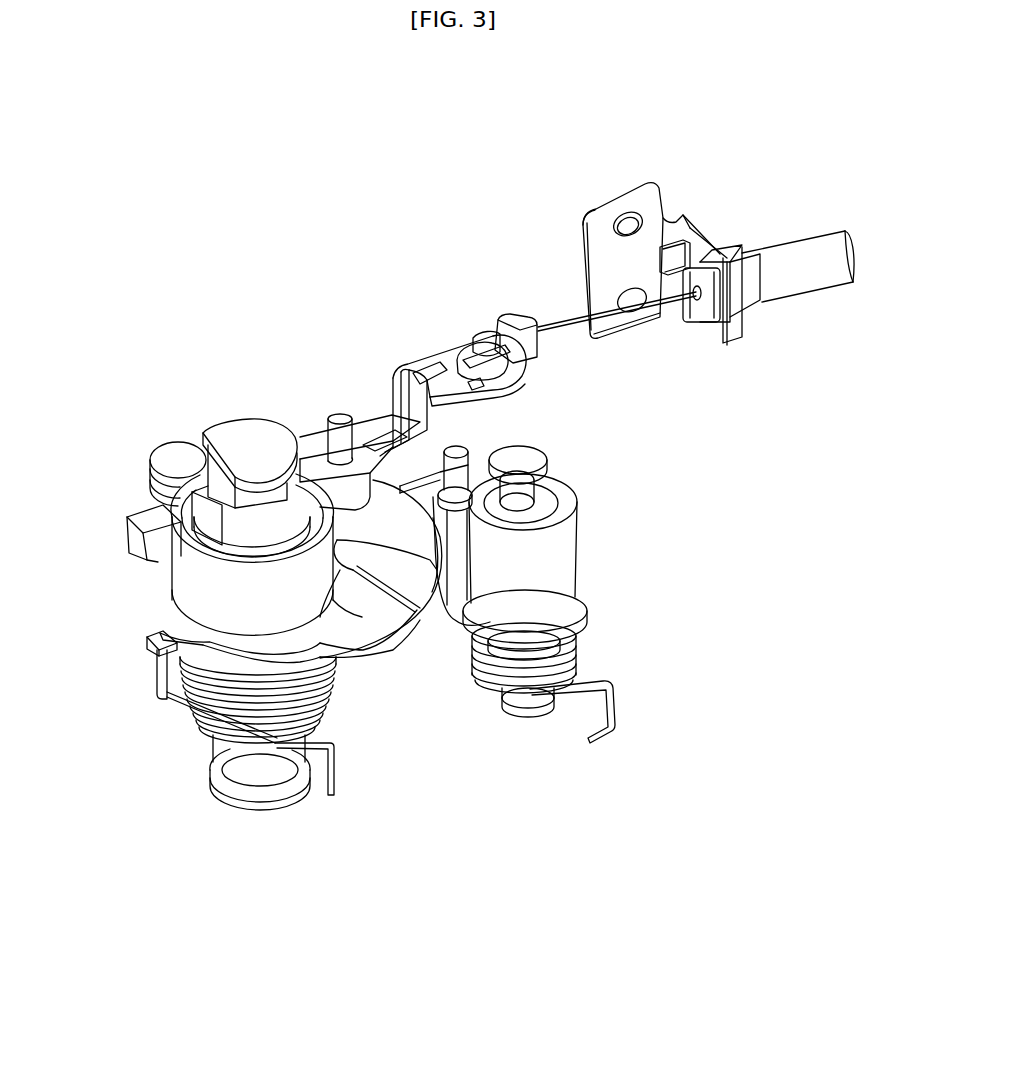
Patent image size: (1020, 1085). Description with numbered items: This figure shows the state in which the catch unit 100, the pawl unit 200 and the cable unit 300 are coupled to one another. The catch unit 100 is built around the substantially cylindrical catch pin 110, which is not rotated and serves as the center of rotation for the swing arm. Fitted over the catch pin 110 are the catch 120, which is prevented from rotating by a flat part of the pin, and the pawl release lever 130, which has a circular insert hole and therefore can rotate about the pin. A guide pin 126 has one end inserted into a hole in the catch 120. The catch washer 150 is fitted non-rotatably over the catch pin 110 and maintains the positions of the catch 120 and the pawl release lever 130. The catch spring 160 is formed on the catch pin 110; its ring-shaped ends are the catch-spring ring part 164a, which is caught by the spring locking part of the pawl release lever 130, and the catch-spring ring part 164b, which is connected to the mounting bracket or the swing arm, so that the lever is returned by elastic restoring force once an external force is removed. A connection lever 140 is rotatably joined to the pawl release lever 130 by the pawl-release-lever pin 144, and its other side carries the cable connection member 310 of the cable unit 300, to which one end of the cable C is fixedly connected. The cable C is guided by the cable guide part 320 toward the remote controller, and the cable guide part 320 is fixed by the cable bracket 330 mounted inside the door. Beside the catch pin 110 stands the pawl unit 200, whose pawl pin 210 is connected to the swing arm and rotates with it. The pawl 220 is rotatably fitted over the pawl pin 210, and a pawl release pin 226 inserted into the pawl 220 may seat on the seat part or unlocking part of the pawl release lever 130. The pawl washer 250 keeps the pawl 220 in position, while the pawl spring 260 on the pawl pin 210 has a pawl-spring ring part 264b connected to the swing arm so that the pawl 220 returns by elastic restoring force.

The catch unit 100 is at (262, 814).
The catch pin 110 is at (200, 700).
The catch 120 is at (160, 617).
The guide pin 126 is at (338, 416).
The pawl release lever 130 is at (190, 572).
The connection lever 140 is at (400, 370).
The pawl-release-lever pin 144 is at (178, 440).
The catch washer 150 is at (190, 572).
The catch spring 160 is at (205, 732).
The catch-spring ring part 164a is at (158, 670).
The catch-spring ring part 164b is at (335, 766).
The pawl unit 200 is at (537, 727).
The pawl pin 210 is at (575, 626).
The pawl 220 is at (587, 598).
The pawl release pin 226 is at (457, 466).
The pawl washer 250 is at (563, 536).
The pawl spring 260 is at (573, 650).
The pawl-spring ring part 264b is at (618, 707).
The cable unit 300 is at (698, 178).
The cable connection member 310 is at (510, 303).
The cable guide part 320 is at (806, 255).
The cable bracket 330 is at (625, 205).
The cable C is at (566, 323).